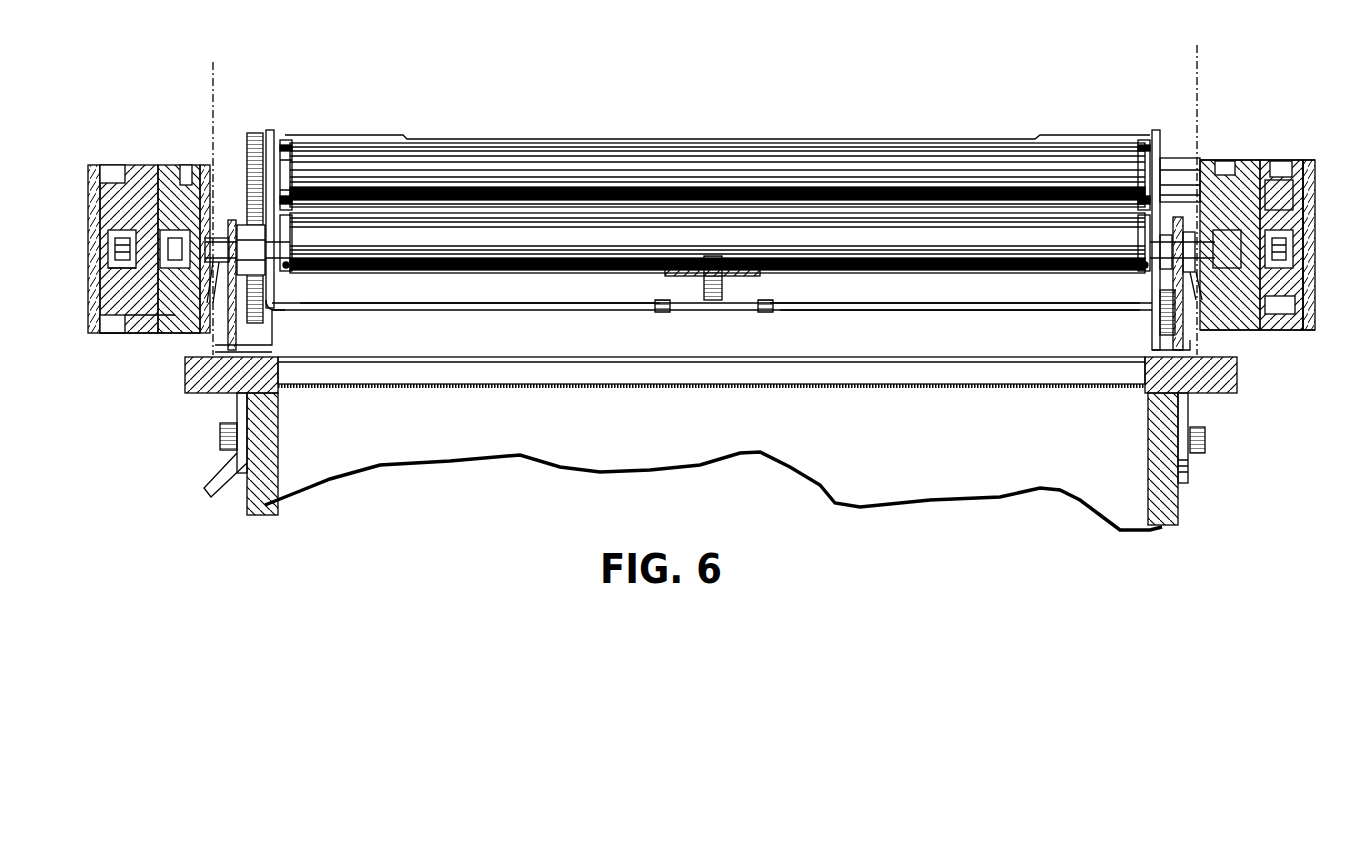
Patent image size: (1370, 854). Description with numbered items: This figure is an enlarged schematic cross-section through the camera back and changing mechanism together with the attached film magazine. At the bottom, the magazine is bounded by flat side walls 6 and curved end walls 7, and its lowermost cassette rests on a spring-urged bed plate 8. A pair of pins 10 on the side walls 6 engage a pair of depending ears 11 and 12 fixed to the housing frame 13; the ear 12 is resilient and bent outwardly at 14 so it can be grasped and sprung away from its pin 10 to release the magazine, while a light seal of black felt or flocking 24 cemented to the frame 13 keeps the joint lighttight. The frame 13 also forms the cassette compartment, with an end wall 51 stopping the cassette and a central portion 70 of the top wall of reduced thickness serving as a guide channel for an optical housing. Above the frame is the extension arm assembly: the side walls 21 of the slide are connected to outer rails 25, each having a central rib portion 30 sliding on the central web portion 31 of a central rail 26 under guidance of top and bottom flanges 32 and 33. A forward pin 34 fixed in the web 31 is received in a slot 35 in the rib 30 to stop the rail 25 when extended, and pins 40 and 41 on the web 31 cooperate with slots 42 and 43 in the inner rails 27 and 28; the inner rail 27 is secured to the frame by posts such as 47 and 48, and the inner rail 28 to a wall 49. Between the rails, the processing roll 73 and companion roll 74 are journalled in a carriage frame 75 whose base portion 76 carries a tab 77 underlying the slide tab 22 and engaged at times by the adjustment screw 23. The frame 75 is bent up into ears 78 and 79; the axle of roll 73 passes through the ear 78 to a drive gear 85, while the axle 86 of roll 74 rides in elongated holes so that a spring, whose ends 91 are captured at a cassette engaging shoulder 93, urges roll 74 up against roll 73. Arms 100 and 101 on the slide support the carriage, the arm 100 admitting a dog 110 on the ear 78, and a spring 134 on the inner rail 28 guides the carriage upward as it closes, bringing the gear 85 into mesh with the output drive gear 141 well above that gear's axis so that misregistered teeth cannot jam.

The side wall 6 is at (270, 495).
The end wall 7 is at (1200, 50).
The bed plate 8 is at (210, 73).
The pin 10 is at (220, 437).
The ear 11 is at (1185, 410).
The ear 12 is at (215, 468).
The housing frame 13 is at (1232, 375).
The outwardly bent portion 14 is at (214, 500).
The side wall 21 is at (95, 243).
The tab 22 is at (760, 272).
The adjustment screw 23 is at (705, 290).
The light seal 24 is at (428, 388).
The outer rail 25 is at (100, 160).
The central rail 26 is at (135, 168).
The inner rail 27 is at (1215, 168).
The inner rail 28 is at (175, 168).
The central rib portion 30 is at (128, 322).
The central web portion 31 is at (1285, 298).
The flange 32 is at (1250, 178).
The flange 33 is at (1265, 332).
The forward pin 34 is at (110, 265).
The slot 35 is at (112, 240).
The pin 40 is at (1295, 195).
The pin 41 is at (162, 328).
The slot 42 is at (1178, 240).
The slot 43 is at (182, 205).
The post 47 is at (1165, 314).
The post 48 is at (1178, 160).
The wall 49 is at (213, 165).
The end wall 51 is at (360, 135).
The central portion of the top wall 70 is at (835, 139).
The processing roll 73 is at (715, 168).
The processing roll 74 is at (615, 238).
The carriage frame 75 is at (810, 312).
The base portion 76 is at (970, 303).
The tab 77 is at (722, 312).
The ear 78 is at (278, 138).
The ear 79 is at (1157, 138).
The drive gear 85 is at (255, 135).
The axle 86 is at (290, 195).
The spring end 91 is at (286, 268).
The cassette engaging shoulder 93 is at (490, 296).
The arm 100 is at (188, 368).
The arm 101 is at (1188, 195).
The dog 110 is at (262, 338).
The spring 134 is at (255, 255).
The output drive gear 141 is at (262, 314).